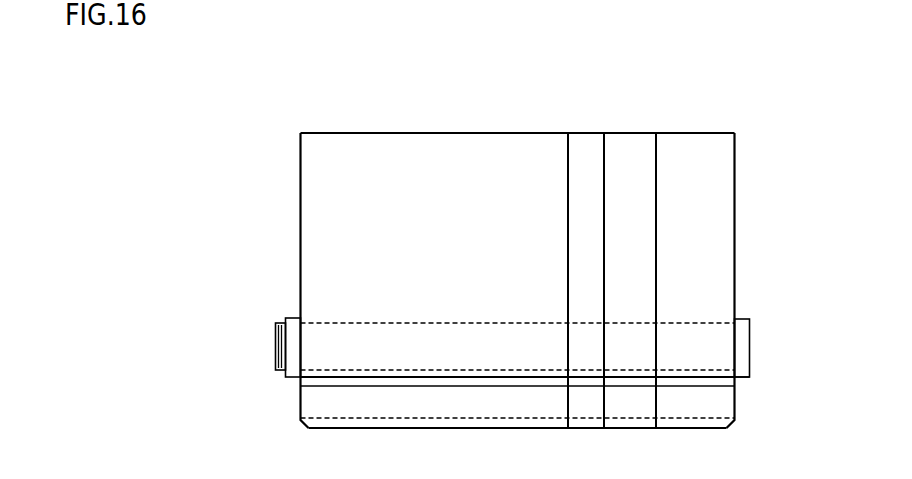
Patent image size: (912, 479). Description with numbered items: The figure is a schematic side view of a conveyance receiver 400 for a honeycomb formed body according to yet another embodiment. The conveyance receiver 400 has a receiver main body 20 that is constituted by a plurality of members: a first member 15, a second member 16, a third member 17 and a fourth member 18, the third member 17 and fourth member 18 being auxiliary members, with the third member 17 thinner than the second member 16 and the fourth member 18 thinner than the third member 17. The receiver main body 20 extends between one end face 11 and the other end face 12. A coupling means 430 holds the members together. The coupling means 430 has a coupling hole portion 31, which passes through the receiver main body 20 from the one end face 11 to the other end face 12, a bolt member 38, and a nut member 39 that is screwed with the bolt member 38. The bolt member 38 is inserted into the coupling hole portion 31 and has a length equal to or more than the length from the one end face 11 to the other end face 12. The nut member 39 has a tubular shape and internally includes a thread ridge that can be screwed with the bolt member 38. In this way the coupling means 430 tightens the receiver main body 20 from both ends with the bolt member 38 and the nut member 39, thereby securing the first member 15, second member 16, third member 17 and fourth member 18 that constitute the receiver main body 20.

The conveyance receiver 400 is at (810, 73).
The one end face 11 is at (301, 197).
The other end face 12 is at (735, 170).
The first member 15 is at (398, 160).
The receiver main body 20 is at (491, 126).
The third member 17 is at (582, 142).
The fourth member 18 is at (629, 142).
The second member 16 is at (691, 142).
The coupling hole portion 31 is at (692, 332).
The bolt member 38 is at (275, 342).
The nut member 39 is at (285, 377).
The coupling means 430 is at (759, 347).